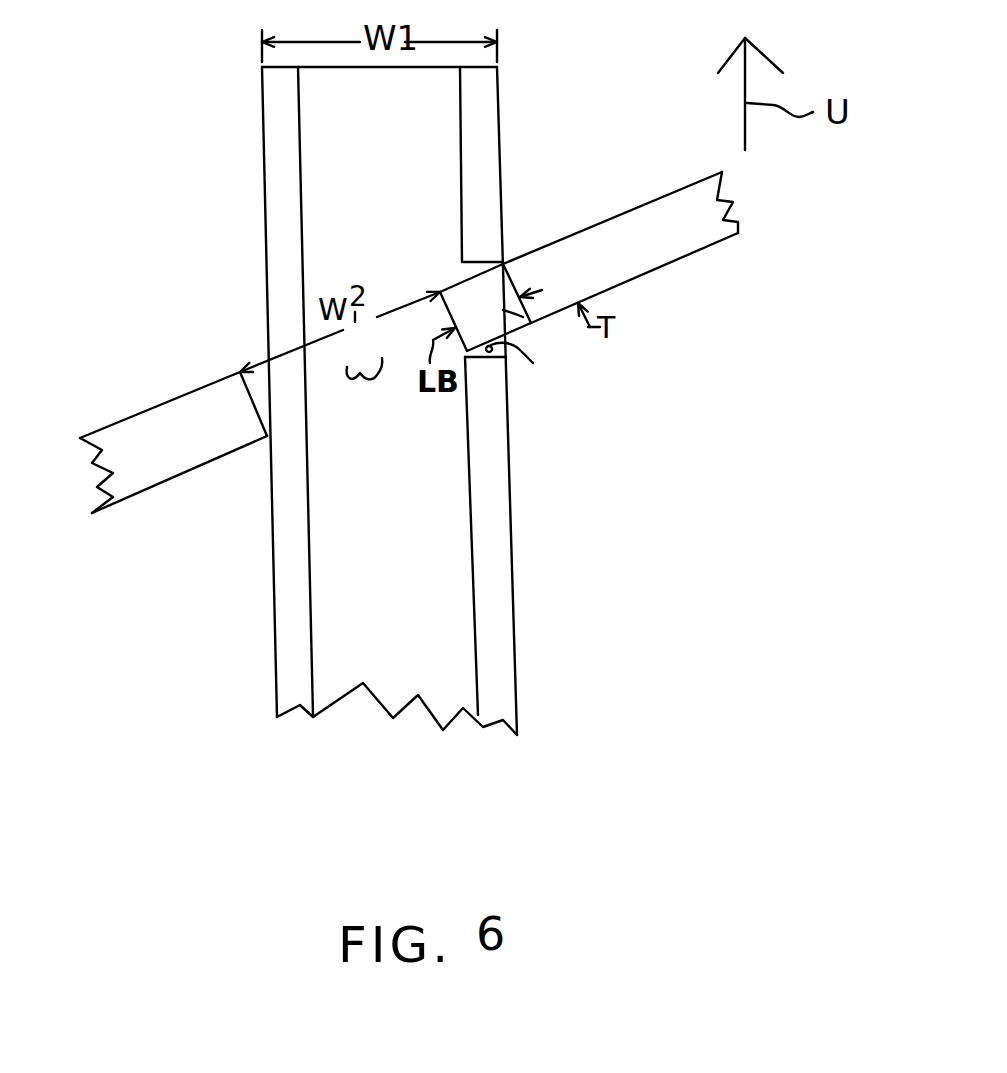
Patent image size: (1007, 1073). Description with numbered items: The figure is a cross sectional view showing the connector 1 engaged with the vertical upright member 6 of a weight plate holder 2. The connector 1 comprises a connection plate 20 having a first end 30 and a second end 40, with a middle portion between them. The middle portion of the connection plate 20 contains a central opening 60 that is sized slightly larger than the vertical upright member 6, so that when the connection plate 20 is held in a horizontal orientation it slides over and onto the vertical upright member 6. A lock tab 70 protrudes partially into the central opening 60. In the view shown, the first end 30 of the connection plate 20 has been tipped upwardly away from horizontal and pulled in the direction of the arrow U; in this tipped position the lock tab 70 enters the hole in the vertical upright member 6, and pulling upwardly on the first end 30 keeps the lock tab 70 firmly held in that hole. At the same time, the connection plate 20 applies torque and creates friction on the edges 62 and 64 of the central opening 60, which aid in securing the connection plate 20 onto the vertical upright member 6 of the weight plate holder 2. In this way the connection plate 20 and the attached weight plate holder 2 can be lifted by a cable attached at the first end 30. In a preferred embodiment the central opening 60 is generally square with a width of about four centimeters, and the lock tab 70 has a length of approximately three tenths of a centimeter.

The connector 1 is at (122, 502).
The weight plate holder 2 is at (514, 620).
The vertical upright member 6 is at (511, 505).
The connection plate 20 is at (192, 405).
The first end 30 is at (633, 230).
The second end 40 is at (135, 450).
The central opening 60 is at (368, 378).
The edge of central opening 62 is at (503, 262).
The edge of central opening 64 is at (267, 437).
The lock tab 70 is at (531, 323).